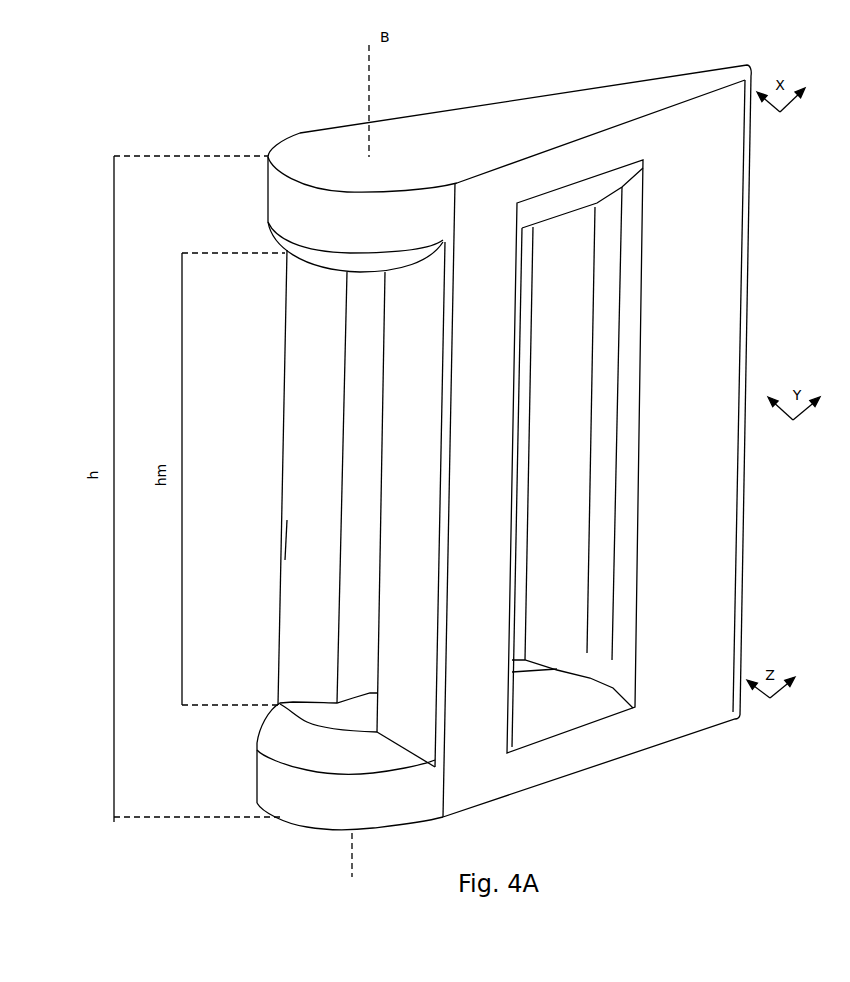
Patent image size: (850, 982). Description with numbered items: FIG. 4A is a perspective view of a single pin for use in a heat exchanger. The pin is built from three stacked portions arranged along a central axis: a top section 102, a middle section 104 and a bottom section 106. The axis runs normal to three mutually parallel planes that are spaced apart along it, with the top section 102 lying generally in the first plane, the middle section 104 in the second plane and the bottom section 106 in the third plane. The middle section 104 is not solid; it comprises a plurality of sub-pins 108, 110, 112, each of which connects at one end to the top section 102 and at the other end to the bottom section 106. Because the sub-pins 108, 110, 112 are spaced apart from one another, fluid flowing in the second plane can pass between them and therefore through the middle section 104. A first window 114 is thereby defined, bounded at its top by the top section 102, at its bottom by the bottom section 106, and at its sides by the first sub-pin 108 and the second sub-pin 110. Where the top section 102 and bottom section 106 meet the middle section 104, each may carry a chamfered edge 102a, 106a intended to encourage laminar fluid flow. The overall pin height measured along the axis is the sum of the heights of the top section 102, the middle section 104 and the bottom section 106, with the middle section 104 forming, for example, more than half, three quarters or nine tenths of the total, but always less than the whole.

The top section 102 is at (335, 215).
The chamfered edge 102a is at (575, 197).
The middle section 104 is at (315, 470).
The bottom section 106 is at (325, 797).
The chamfered edge 106a is at (553, 713).
The first sub-pin 108 is at (301, 408).
The second sub-pin 110 is at (397, 631).
The third sub-pin 112 is at (679, 408).
The first window 114 is at (360, 548).